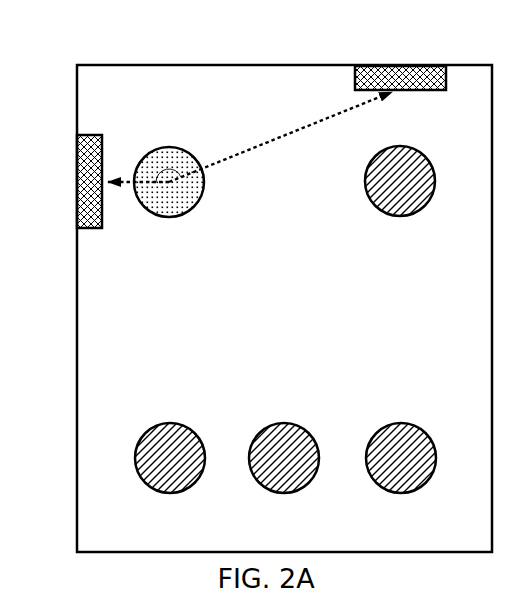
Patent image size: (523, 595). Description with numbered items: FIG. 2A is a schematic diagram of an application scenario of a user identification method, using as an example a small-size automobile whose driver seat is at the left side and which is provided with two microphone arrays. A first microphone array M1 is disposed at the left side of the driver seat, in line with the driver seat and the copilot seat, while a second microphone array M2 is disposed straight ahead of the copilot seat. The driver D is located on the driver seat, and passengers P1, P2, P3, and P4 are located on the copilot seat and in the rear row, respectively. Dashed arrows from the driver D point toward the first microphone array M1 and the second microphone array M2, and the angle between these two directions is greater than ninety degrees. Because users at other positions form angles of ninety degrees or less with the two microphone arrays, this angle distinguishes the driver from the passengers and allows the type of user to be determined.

The first microphone array M1 is at (77, 189).
The second microphone array M2 is at (398, 66).
The driver D is at (172, 217).
The passenger P1 is at (402, 203).
The passenger P2 is at (172, 478).
The passenger P3 is at (287, 478).
The passenger P4 is at (404, 478).